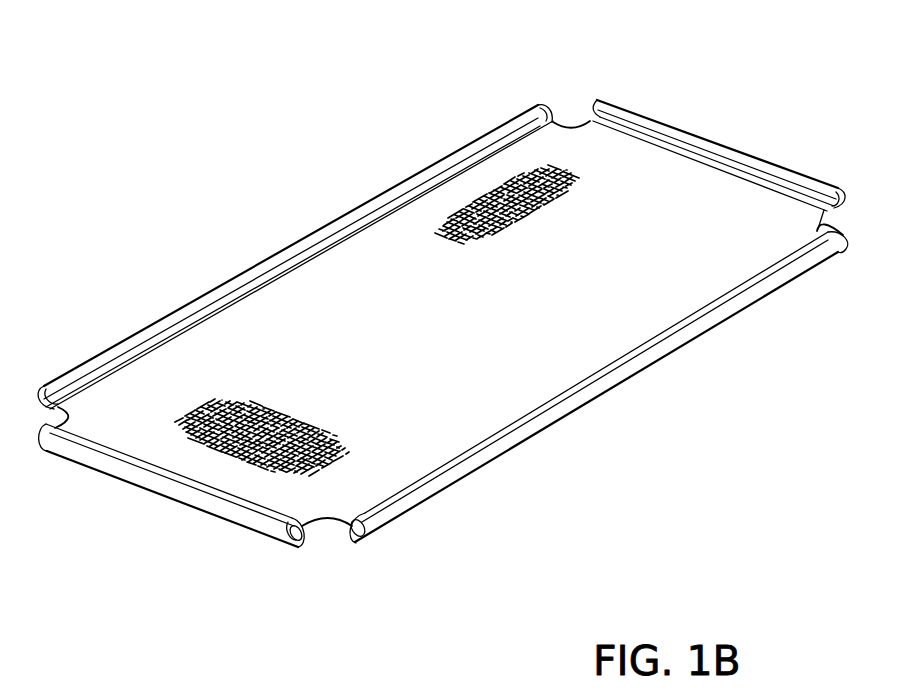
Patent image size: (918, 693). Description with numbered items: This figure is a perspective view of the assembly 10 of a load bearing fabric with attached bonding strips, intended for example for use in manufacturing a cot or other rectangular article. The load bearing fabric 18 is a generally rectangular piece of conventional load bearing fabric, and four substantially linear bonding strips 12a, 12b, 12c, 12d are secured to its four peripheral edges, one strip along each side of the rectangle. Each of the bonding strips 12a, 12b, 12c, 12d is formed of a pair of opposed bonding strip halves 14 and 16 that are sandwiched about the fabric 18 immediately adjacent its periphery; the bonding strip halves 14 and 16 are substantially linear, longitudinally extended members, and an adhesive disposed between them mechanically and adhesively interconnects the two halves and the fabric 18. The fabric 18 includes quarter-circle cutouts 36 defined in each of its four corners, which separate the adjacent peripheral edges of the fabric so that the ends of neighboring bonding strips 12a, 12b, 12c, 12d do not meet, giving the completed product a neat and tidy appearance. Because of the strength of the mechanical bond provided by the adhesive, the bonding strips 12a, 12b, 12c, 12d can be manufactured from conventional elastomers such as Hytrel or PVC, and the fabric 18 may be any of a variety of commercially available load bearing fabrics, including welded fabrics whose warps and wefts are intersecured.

The assembly 10 is at (262, 138).
The bonding strip 12a is at (388, 187).
The bonding strip 12b is at (688, 131).
The bonding strip 12c is at (623, 380).
The bonding strip 12d is at (153, 490).
The bonding strip half 14 is at (808, 187).
The bonding strip half 16 is at (843, 200).
The load bearing fabric 18 is at (695, 288).
The quarter-circle cutout 36 is at (572, 123).